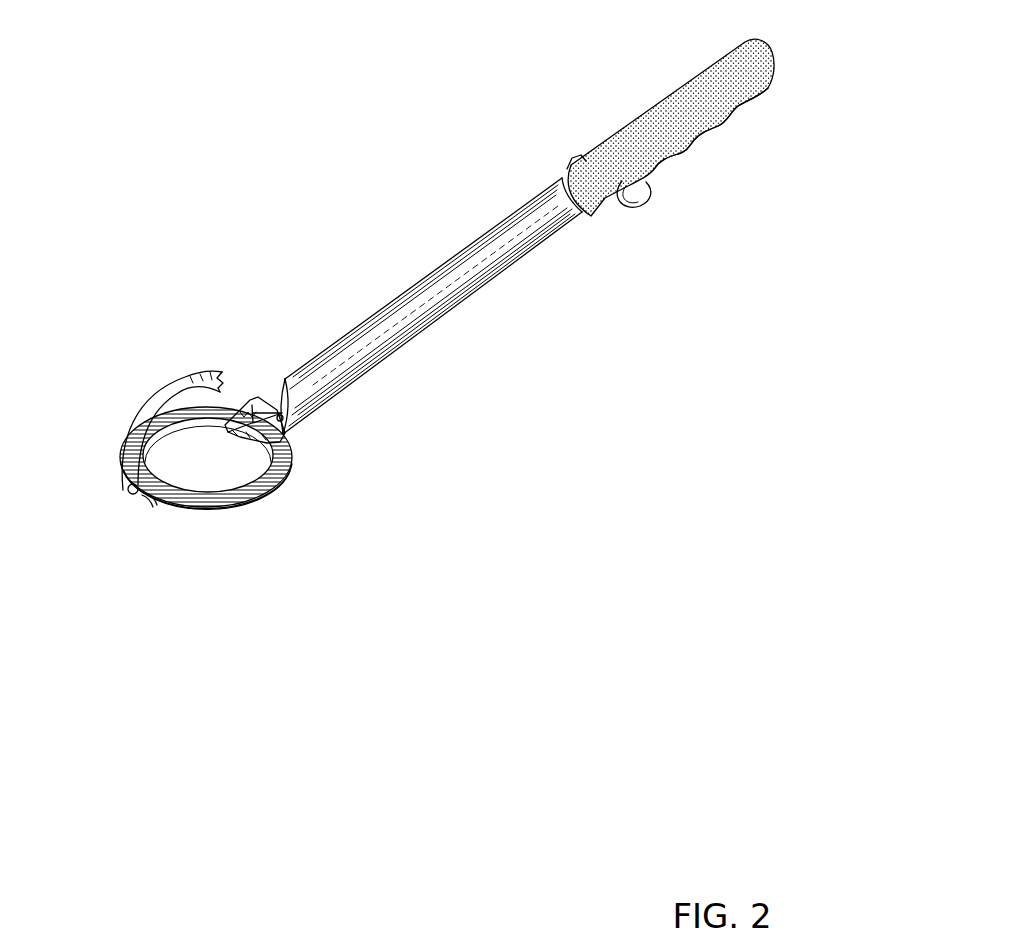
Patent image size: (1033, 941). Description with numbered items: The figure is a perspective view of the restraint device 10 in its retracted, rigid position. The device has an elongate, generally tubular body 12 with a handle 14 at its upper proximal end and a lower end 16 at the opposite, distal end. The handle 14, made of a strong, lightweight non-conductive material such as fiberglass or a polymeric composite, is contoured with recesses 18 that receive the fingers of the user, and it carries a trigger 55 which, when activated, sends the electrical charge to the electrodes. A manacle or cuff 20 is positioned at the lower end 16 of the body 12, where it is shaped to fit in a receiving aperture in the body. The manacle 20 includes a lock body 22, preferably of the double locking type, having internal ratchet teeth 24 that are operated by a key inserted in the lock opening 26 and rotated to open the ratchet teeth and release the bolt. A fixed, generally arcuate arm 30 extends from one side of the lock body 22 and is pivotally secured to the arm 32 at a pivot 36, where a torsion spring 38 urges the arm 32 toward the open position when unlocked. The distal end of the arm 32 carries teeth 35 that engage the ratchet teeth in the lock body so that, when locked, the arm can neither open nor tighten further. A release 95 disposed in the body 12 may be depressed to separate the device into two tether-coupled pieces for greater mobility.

The restraint device 10 is at (440, 222).
The body 12 is at (538, 257).
The handle 14 is at (703, 73).
The lower end 16 is at (296, 370).
The recesses 18 is at (731, 115).
The manacle or cuff 20 is at (152, 326).
The lock body 22 is at (282, 436).
The internal ratchet teeth 24 is at (251, 420).
The lock opening 26 is at (283, 414).
The fixed arm 30 is at (280, 467).
The arm 32 is at (137, 473).
The teeth 35 is at (173, 380).
The pivot 36 is at (130, 489).
The torsion spring 38 is at (148, 501).
The trigger 55 is at (614, 196).
The release 95 is at (567, 153).